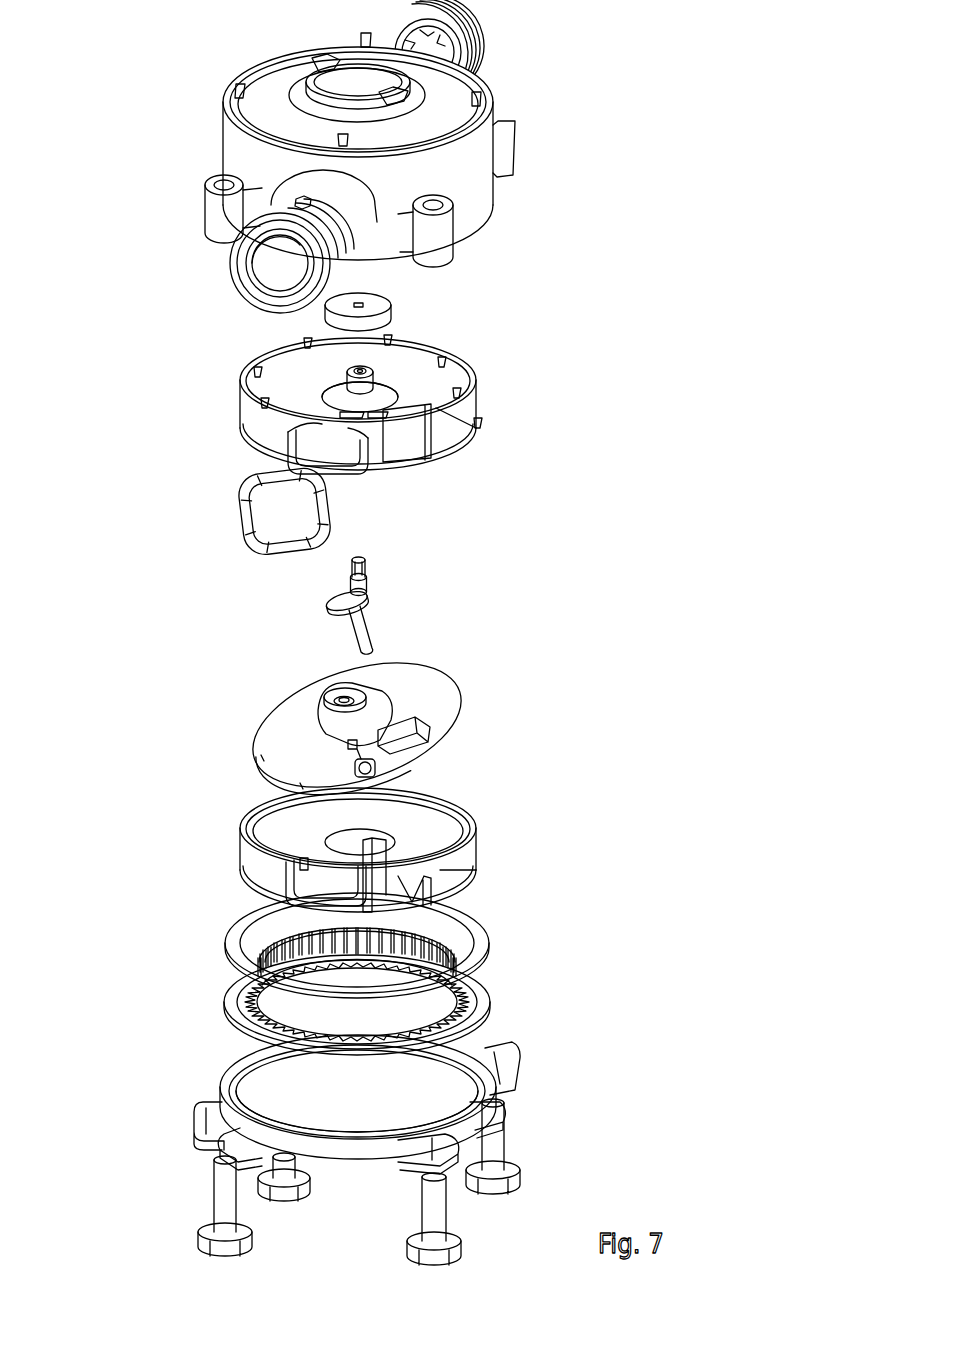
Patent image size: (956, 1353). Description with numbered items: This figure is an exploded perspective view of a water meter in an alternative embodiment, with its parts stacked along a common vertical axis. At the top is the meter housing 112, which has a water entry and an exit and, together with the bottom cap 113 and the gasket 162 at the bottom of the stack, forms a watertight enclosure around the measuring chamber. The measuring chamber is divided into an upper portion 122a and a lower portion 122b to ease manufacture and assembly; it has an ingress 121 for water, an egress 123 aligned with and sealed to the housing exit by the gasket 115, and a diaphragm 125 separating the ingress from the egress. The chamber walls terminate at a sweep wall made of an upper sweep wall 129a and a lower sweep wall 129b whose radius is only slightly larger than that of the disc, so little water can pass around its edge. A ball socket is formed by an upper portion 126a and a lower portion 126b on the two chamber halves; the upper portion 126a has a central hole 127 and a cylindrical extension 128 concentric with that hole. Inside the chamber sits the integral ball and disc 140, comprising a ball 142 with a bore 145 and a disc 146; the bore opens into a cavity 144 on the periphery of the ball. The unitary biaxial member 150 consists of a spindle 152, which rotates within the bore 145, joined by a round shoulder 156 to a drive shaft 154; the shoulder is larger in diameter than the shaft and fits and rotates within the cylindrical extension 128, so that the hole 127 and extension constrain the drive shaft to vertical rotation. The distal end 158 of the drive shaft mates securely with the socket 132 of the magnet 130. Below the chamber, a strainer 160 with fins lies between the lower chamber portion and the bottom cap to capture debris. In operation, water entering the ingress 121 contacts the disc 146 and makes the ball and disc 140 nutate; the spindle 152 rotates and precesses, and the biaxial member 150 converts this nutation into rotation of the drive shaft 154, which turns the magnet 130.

The meter housing 112 is at (450, 203).
The bottom cap 113 is at (490, 1112).
The gasket 115 is at (238, 511).
The ingress 121 is at (400, 897).
The upper portion of measuring chamber 122a is at (262, 370).
The lower portion of measuring chamber 122b is at (300, 888).
The egress 123 is at (345, 912).
The diaphragm 125 is at (387, 857).
The upper portion of ball socket 126a is at (377, 400).
The lower portion of ball socket 126b is at (375, 843).
The hole 127 is at (362, 370).
The cylindrical extension 128 is at (373, 382).
The upper sweep wall 129a is at (463, 425).
The lower sweep wall 129b is at (452, 880).
The magnet 130 is at (372, 312).
The socket 132 is at (366, 301).
The ball and disc 140 is at (363, 726).
The ball 142 is at (380, 705).
The cavity 144 is at (362, 688).
The bore 145 is at (340, 699).
The disc 146 is at (433, 711).
The unitary biaxial member 150 is at (391, 595).
The spindle 152 is at (363, 627).
The drive shaft 154 is at (364, 580).
The round shoulder 156 is at (348, 592).
The distal end of drive shaft 158 is at (362, 560).
The strainer 160 is at (235, 1008).
The gasket 162 is at (233, 947).